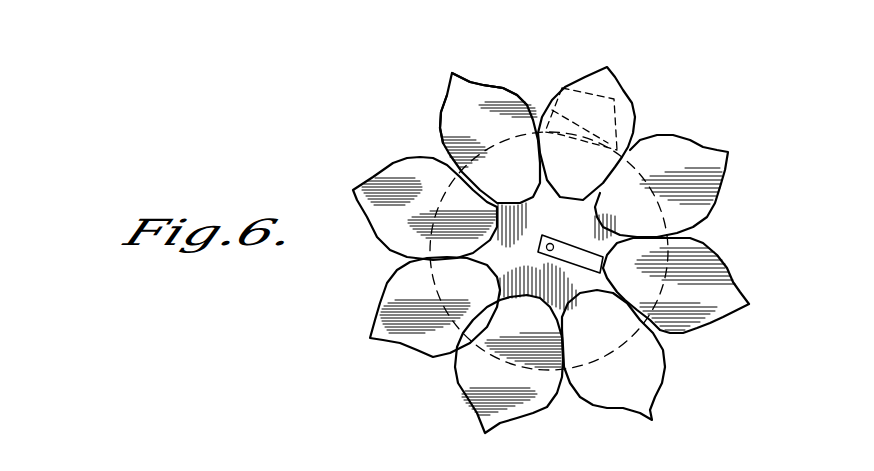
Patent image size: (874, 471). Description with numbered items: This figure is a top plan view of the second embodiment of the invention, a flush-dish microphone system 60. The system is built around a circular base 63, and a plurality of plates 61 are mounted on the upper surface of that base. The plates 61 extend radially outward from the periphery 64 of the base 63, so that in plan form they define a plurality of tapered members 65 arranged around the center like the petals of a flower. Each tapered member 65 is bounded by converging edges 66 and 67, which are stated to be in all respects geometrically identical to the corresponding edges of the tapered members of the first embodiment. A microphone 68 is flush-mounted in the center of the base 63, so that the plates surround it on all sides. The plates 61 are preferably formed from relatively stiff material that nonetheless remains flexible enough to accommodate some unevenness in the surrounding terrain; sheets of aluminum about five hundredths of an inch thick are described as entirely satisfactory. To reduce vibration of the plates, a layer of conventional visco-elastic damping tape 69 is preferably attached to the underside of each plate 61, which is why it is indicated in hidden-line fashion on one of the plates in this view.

The flush-dish microphone system 60 is at (698, 101).
The plates 61 is at (471, 101).
The circular base 63 is at (653, 275).
The periphery 64 is at (657, 190).
The tapered members 65 is at (482, 80).
The converging edge 66 is at (485, 84).
The converging edge 67 is at (440, 118).
The microphone 68 is at (538, 252).
The visco-elastic damping tape 69 is at (605, 92).